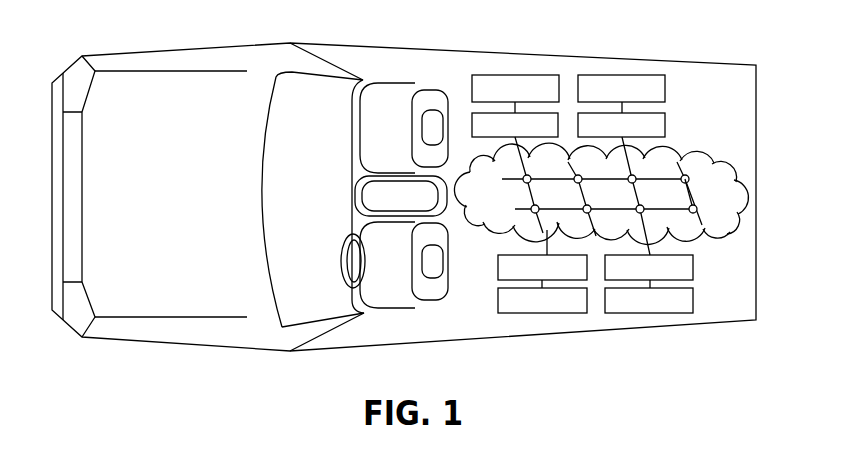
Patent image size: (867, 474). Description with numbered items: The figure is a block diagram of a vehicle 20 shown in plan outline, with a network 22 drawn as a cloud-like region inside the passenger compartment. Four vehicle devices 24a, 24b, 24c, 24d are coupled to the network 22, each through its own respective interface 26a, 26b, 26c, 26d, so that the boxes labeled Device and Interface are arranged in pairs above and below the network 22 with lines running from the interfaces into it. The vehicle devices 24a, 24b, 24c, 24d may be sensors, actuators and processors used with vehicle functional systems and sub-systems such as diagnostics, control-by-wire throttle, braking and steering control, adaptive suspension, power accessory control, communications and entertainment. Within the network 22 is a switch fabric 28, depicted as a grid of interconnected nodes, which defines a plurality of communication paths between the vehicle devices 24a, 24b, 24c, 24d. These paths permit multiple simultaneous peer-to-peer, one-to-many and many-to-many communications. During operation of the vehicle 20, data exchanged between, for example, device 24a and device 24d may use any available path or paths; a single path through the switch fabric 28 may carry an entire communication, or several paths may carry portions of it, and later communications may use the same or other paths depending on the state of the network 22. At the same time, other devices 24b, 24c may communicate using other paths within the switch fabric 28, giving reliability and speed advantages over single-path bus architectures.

The vehicle 20 is at (170, 212).
The network 22 is at (722, 162).
The vehicle device 24a is at (538, 75).
The vehicle device 24b is at (643, 75).
The vehicle device 24c is at (557, 313).
The vehicle device 24d is at (653, 313).
The interface 26a is at (470, 118).
The interface 26b is at (665, 124).
The interface 26c is at (498, 265).
The interface 26d is at (693, 265).
The switch fabric 28 is at (718, 213).